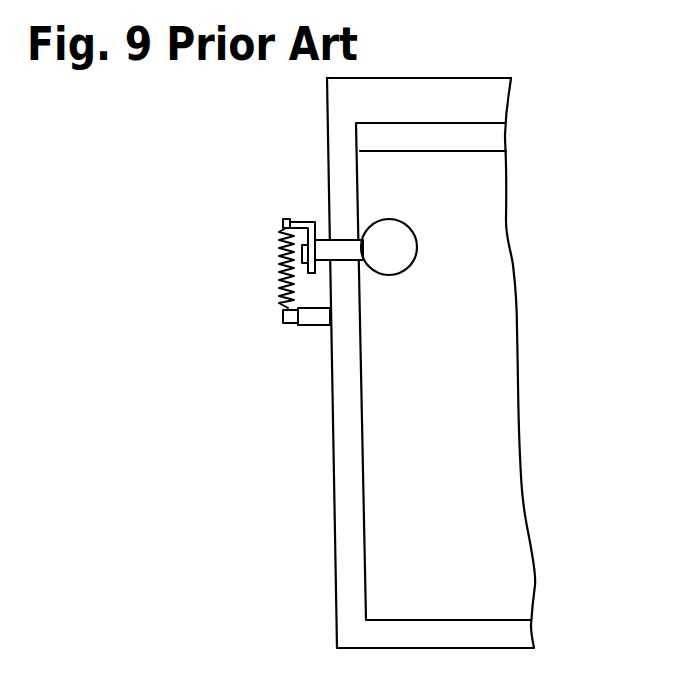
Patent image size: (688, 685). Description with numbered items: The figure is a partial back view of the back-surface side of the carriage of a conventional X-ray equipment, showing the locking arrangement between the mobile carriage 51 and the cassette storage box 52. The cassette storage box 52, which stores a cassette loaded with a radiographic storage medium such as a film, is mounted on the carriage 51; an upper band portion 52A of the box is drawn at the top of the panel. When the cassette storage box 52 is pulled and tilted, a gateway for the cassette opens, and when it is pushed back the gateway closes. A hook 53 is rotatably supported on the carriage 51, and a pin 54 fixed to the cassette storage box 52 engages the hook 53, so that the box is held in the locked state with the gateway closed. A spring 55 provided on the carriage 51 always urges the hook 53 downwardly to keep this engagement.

The mobile carriage 51 is at (334, 105).
The cassette storage box 52 is at (493, 332).
The upper band of inner panel 52A is at (493, 134).
The hook 53 is at (322, 271).
The pin 54 is at (360, 220).
The spring 55 is at (280, 270).